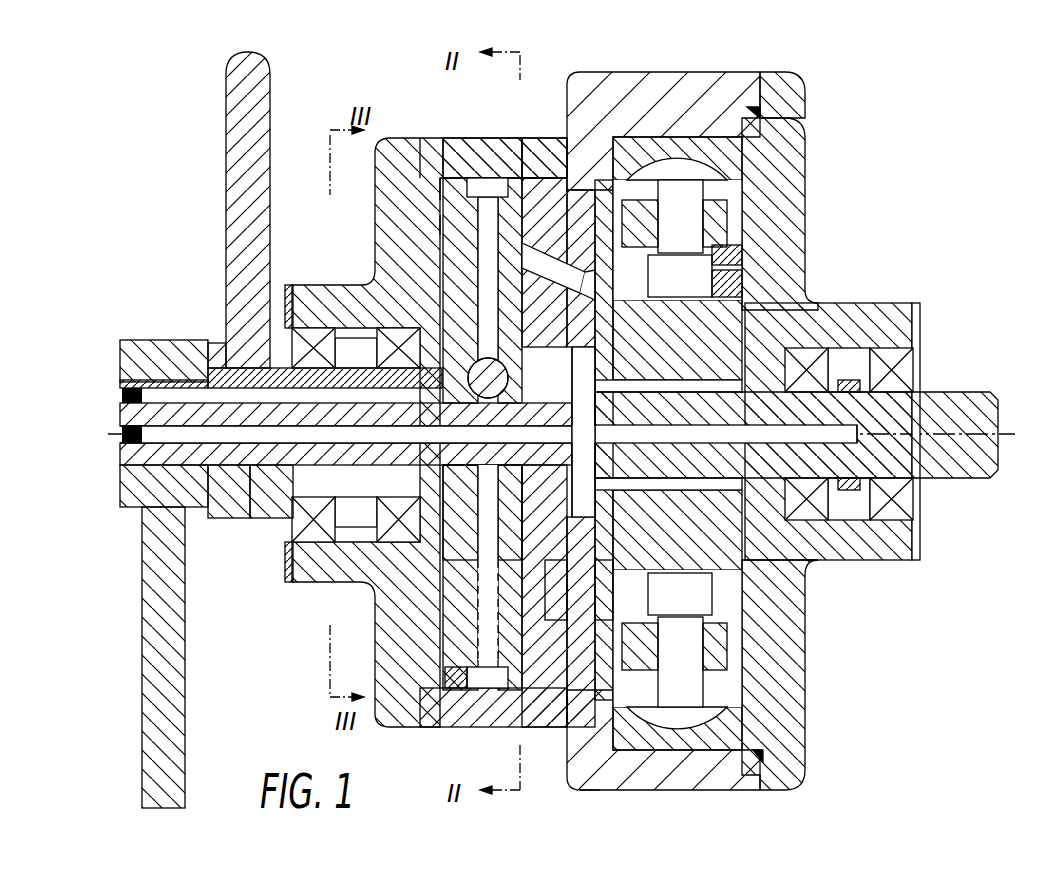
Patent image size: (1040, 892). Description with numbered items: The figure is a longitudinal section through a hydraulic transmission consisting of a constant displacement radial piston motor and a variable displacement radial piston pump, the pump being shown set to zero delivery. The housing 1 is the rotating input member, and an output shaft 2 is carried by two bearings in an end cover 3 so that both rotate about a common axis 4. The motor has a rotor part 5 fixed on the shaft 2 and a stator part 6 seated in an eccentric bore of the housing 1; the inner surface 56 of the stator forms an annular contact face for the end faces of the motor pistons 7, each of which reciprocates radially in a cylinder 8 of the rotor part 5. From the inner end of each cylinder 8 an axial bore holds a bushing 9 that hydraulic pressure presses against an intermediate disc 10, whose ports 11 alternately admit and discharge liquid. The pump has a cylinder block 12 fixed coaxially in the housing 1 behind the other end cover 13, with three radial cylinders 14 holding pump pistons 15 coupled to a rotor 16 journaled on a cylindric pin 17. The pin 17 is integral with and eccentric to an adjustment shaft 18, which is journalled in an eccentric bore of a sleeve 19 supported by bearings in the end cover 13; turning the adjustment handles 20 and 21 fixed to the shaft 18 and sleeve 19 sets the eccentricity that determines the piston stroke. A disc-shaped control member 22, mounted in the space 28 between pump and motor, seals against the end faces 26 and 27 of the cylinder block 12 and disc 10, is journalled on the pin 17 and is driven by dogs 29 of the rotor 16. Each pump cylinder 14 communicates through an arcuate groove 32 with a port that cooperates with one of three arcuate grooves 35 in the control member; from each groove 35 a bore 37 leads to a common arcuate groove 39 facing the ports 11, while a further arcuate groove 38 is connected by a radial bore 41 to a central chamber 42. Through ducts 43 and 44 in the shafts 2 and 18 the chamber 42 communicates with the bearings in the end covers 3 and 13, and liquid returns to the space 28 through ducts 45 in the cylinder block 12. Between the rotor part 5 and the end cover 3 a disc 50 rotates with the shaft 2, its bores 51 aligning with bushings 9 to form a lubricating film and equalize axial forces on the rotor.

The housing 1 is at (760, 103).
The shaft 2 is at (955, 468).
The end cover 3 is at (883, 313).
The common axis 4 is at (941, 432).
The rotor part (cylinder block) of the motor 5 is at (730, 322).
The stator part 6 is at (727, 152).
The motor piston 7 is at (690, 192).
The cylinder 8 is at (690, 268).
The bushing 9 is at (823, 632).
The intermediate disc 10 is at (578, 615).
The port 11 is at (680, 594).
The cylinder block 12 is at (450, 192).
The end cover 13 is at (400, 150).
The cylinder 14 is at (486, 200).
The pump piston 15 is at (483, 226).
The rotor 16 is at (400, 518).
The cylindric pin 17 is at (477, 452).
The adjustment shaft 18 is at (233, 452).
The sleeve 19 is at (268, 478).
The adjustment handle 20 is at (170, 592).
The adjustment handle 21 is at (236, 218).
The control member 22 is at (552, 247).
The end face 26 is at (522, 200).
The end face 27 is at (592, 268).
The space 28 is at (543, 665).
The dogs 29 is at (523, 384).
The arcuate groove 32 is at (470, 190).
The arcuate groove 35 is at (523, 252).
The bore 37 is at (517, 360).
The arcuate groove 38 is at (563, 610).
The arcuate groove 39 is at (615, 240).
The radial bore 41 is at (808, 560).
The central chamber 42 is at (600, 513).
The duct 43 is at (860, 447).
The duct 44 is at (163, 433).
The duct 45 is at (465, 665).
The disc 50 is at (762, 243).
The bore 51 is at (766, 272).
The inner surface 56 is at (598, 775).